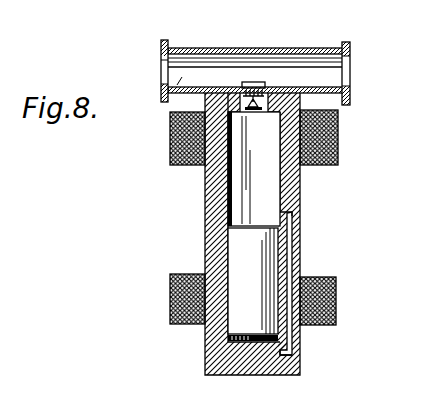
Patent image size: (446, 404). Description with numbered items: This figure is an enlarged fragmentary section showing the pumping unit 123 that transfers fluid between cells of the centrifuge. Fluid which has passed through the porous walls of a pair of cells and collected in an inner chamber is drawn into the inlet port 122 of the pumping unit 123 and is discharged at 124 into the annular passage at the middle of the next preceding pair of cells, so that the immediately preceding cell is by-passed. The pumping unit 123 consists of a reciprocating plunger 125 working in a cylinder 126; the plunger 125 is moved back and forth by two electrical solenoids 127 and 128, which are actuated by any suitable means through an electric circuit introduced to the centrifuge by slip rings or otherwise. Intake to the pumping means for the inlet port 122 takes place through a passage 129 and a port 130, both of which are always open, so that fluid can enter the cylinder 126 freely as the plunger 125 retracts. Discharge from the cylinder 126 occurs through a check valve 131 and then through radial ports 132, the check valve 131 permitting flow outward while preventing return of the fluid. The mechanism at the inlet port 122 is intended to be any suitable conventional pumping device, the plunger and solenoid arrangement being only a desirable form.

The inlet port 122 is at (292, 353).
The pumping unit 123 is at (207, 200).
The discharge 124 is at (161, 61).
The reciprocating plunger 125 is at (273, 272).
The cylinder 126 is at (270, 182).
The electrical solenoid 127 is at (170, 144).
The electrical solenoid 128 is at (170, 303).
The passage 129 is at (290, 257).
The port 130 is at (293, 209).
The check valve 131 is at (260, 83).
The radial ports 132 is at (161, 90).